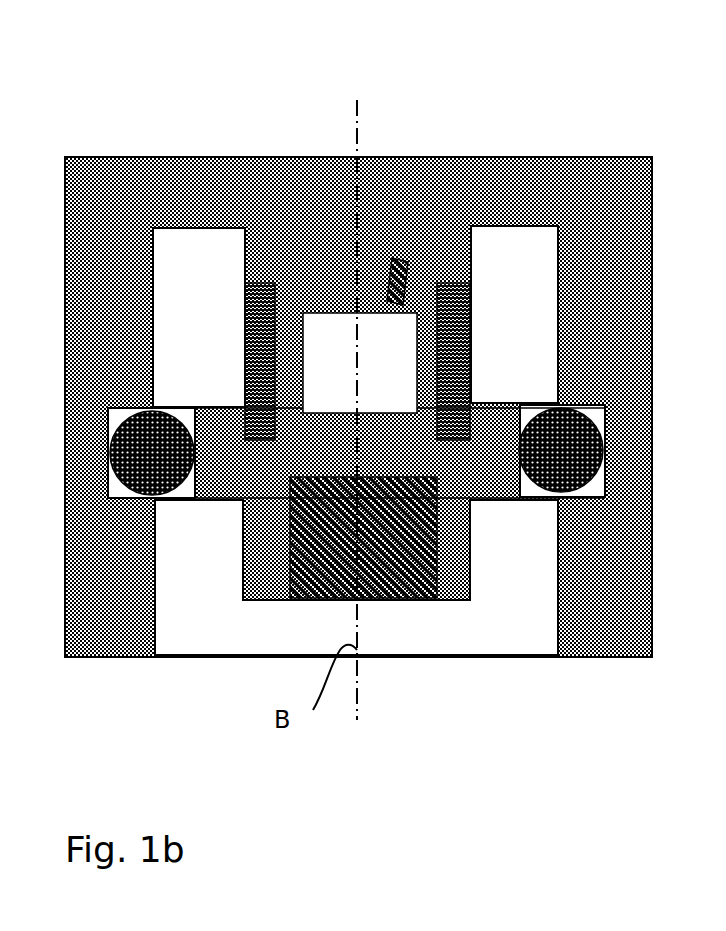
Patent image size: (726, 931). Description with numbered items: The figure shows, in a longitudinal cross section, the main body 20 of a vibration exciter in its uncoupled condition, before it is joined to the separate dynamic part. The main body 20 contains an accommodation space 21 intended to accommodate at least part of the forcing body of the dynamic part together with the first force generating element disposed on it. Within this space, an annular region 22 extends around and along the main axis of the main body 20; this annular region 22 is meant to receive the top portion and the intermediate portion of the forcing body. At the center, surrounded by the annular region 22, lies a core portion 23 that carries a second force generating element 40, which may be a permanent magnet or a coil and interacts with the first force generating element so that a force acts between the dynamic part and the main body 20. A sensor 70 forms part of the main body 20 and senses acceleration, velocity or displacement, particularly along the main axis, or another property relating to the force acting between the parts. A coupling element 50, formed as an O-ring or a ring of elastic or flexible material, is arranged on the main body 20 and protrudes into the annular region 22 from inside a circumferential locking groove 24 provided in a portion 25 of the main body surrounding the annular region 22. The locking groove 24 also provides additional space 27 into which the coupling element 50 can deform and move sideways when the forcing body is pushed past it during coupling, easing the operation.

The main body 20 is at (621, 71).
The accommodation space 21 is at (455, 628).
The annular region 22 is at (522, 292).
The core portion 23 is at (398, 256).
The circumferential locking groove 24 is at (178, 500).
The portion of the main body 25 is at (648, 402).
The additional space 27 is at (652, 444).
The second force generating element 40 is at (243, 340).
The coupling element 50 is at (525, 500).
The sensor 70 is at (338, 360).